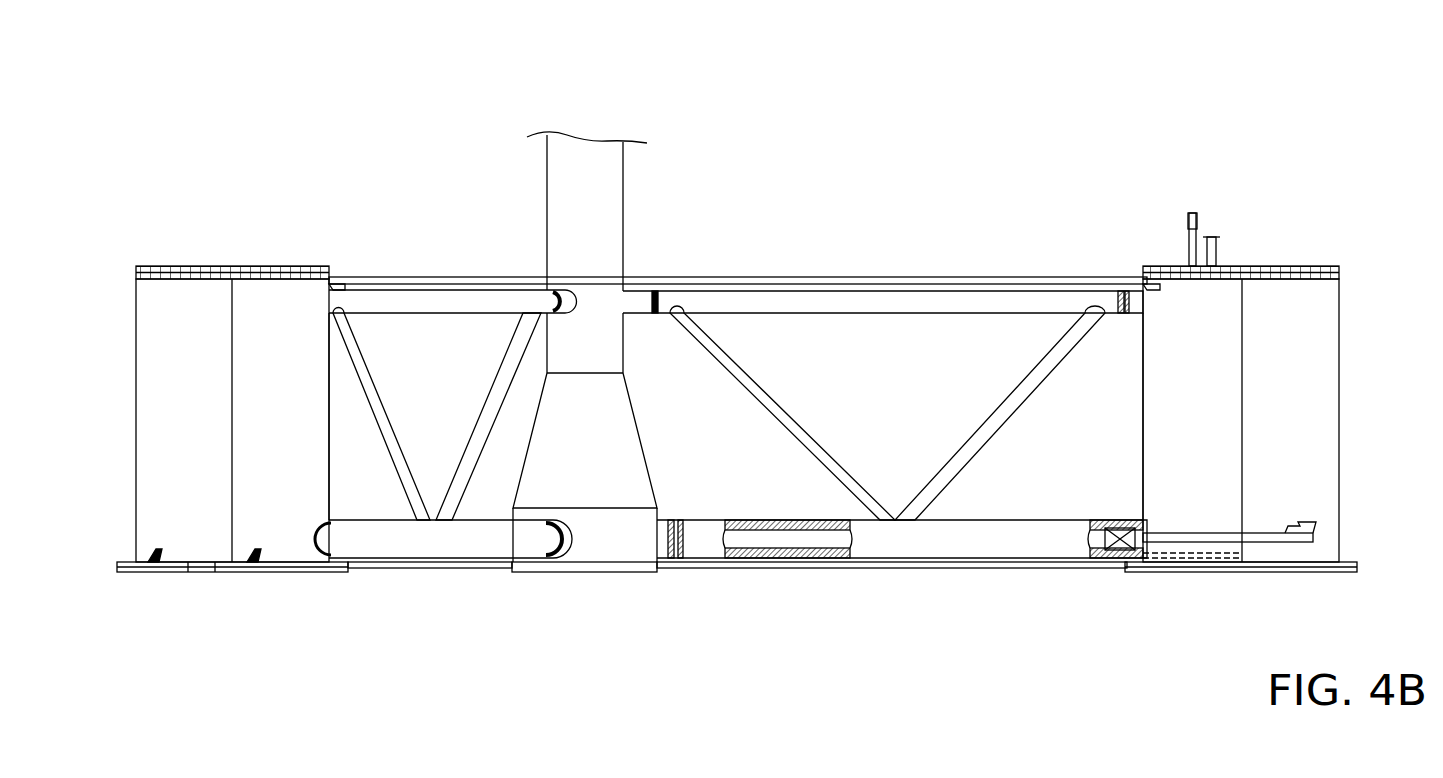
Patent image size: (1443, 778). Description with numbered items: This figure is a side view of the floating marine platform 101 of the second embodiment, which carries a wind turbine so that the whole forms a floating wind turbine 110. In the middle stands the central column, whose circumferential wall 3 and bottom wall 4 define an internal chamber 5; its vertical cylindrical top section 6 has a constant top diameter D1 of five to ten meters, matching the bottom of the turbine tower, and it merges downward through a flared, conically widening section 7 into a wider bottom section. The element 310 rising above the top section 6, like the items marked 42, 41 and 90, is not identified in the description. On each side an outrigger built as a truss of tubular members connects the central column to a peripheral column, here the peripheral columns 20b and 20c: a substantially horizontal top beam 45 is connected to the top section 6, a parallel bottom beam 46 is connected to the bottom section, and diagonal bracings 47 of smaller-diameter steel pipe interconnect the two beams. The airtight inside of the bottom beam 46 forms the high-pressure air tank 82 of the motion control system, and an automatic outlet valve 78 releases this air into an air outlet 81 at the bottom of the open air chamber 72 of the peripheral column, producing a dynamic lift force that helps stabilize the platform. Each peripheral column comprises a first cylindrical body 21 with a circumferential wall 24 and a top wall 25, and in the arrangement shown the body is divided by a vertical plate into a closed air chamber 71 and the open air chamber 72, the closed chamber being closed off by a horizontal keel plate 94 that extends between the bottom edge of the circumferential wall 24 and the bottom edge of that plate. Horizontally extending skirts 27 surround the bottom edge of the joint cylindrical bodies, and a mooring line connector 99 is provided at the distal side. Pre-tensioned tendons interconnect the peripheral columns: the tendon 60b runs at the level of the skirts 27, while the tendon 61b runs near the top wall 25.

The floating wind turbine 110 is at (390, 158).
The column 310 is at (547, 205).
The top plate 42 is at (410, 298).
The vertical cylindrical top section 6 is at (655, 315).
The top beam 45 is at (900, 305).
The tendon 61b is at (960, 278).
The upper chord member 41 is at (1015, 302).
The top wall 25 is at (1160, 265).
The floating marine platform 101 is at (136, 310).
The left tank 90 is at (150, 402).
The circumferential wall 24 is at (143, 460).
The mooring line connector 99 is at (124, 562).
The skirts 27 is at (190, 572).
The bottom wall 4 is at (530, 575).
The peripheral column 20c is at (330, 387).
The first cylindrical body 21 is at (322, 425).
The circumferential wall 3 is at (540, 432).
The flared section 7 is at (625, 440).
The internal chamber 5 is at (640, 495).
The high-pressure air tank 82 is at (782, 527).
The diagonal bracings 47 is at (962, 450).
The peripheral column 20b is at (1143, 398).
The closed off air chamber 71 is at (1206, 386).
The open air chamber 72 is at (1308, 386).
The air outlet 81 is at (1300, 528).
The tendon 60b is at (898, 565).
The bottom beam 46 is at (1015, 542).
The automatic outlet valve 78 is at (1122, 552).
The horizontal keel plate 94 is at (1170, 562).
The top diameter D1 is at (680, 357).